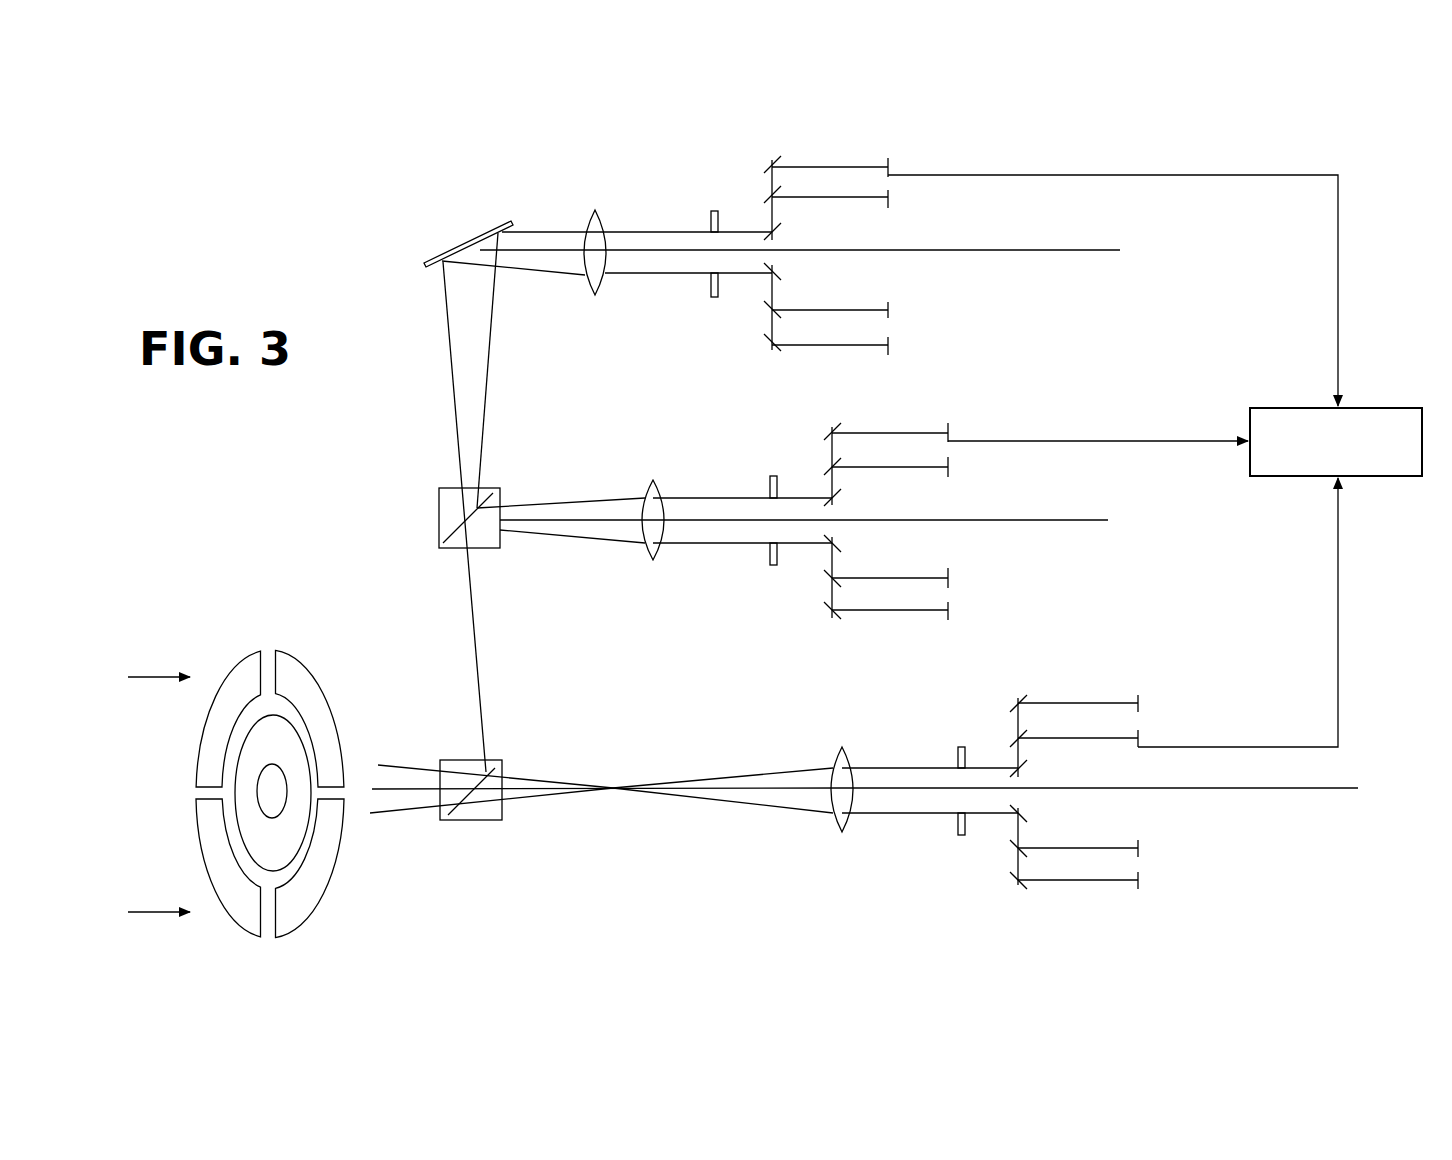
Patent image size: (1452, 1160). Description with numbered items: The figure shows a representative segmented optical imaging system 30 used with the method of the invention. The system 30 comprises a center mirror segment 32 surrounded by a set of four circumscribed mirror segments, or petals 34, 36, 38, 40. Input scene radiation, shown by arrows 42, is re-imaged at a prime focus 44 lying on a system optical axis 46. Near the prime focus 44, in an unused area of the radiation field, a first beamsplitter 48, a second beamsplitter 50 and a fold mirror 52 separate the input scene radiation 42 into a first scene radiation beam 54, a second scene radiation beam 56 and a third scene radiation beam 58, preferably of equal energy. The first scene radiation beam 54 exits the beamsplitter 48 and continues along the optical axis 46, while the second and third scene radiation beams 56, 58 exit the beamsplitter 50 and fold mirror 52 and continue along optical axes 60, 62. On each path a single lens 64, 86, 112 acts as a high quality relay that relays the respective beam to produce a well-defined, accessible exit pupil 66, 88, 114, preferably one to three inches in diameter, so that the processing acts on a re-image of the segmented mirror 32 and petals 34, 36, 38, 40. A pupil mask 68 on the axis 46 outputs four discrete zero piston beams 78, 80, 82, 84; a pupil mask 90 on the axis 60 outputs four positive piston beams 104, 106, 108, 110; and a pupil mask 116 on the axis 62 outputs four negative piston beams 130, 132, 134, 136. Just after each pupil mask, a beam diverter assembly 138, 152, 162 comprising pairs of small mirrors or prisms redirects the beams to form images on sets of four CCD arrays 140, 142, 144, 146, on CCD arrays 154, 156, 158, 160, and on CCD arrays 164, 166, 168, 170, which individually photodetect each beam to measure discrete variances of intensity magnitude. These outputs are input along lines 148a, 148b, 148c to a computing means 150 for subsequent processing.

The segmented optical imaging system 30 is at (296, 757).
The center mirror segment 32 is at (284, 760).
The mirror segment 34 is at (242, 667).
The mirror segment 36 is at (312, 690).
The mirror segment 38 is at (315, 873).
The mirror segment 40 is at (225, 885).
The input scene radiation 42 is at (153, 678).
The prime focus 44 is at (610, 790).
The system optical axis 46 is at (1310, 790).
The first beamsplitter 48 is at (467, 815).
The second beamsplitter 50 is at (440, 495).
The fold mirror 52 is at (447, 240).
The first scene radiation beam 54 is at (770, 782).
The second scene radiation beam 56 is at (583, 505).
The third scene radiation beam 58 is at (556, 245).
The optical axis 60 is at (1083, 521).
The optical axis 62 is at (1057, 250).
The lens 64 is at (840, 748).
The exit pupil 66 is at (948, 760).
The pupil mask 68 is at (960, 835).
The zero piston beam 78 is at (1070, 703).
The zero piston beam 80 is at (1100, 880).
The zero piston beam 82 is at (1100, 738).
The zero piston beam 84 is at (1105, 848).
The lens 86 is at (655, 480).
The exit pupil 88 is at (755, 475).
The pupil mask 90 is at (770, 555).
The positive piston beam 104 is at (880, 433).
The positive piston beam 106 is at (900, 578).
The positive piston beam 108 is at (905, 467).
The positive piston beam 110 is at (928, 610).
The lens 112 is at (600, 212).
The exit pupil 114 is at (700, 196).
The pupil mask 116 is at (712, 290).
The negative piston beam 130 is at (843, 167).
The negative piston beam 132 is at (833, 310).
The negative piston beam 134 is at (862, 197).
The negative piston beam 136 is at (847, 345).
The beam diverter assembly 138 is at (1005, 855).
The CCD array 140 is at (1140, 735).
The CCD array 142 is at (1140, 878).
The CCD array 144 is at (1140, 700).
The CCD array 146 is at (1140, 845).
The line 148a is at (1338, 622).
The line 148b is at (1132, 441).
The line 148c is at (1127, 175).
The computing means 150 is at (1265, 406).
The beam diverter assembly 152 is at (823, 563).
The CCD array 154 is at (950, 430).
The CCD array 156 is at (953, 570).
The CCD array 158 is at (952, 465).
The CCD array 160 is at (953, 605).
The beam diverter assembly 162 is at (757, 181).
The CCD array 164 is at (893, 160).
The CCD array 166 is at (893, 312).
The CCD array 168 is at (893, 197).
The CCD array 170 is at (893, 345).